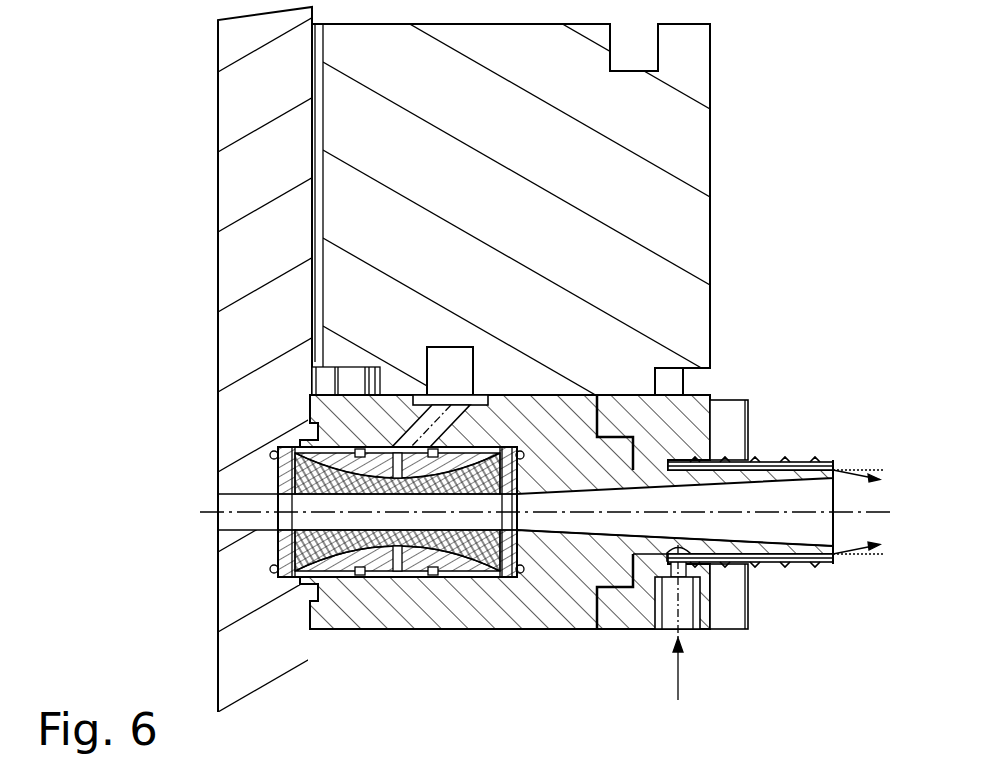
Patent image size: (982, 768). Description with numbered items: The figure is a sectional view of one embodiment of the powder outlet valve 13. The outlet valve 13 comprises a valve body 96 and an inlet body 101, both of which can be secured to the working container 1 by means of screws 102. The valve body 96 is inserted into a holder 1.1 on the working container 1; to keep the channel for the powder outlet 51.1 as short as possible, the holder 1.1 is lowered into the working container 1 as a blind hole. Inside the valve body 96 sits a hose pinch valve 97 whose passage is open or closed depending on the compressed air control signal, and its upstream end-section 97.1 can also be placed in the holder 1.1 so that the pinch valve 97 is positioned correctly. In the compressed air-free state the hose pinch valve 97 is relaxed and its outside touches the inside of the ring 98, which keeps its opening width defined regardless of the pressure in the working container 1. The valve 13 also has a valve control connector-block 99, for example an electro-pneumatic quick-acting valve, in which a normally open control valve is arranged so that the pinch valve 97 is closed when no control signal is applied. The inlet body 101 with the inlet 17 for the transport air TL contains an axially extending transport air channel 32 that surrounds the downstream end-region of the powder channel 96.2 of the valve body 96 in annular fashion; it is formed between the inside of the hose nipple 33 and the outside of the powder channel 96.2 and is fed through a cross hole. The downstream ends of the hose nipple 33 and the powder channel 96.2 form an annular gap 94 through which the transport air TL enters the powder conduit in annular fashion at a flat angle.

The working container 1 is at (218, 252).
The holder 1.1 is at (287, 440).
The powder outlet valve 13 is at (510, 672).
The inlet 17 is at (700, 631).
The transport air channel 32 is at (768, 461).
The hose nipple 33 is at (788, 461).
The powder outlet 51.1 is at (218, 500).
The annular gap 94 is at (831, 563).
The valve body 96 is at (380, 630).
The powder channel 96.2 is at (788, 548).
The hose pinch valve 97 is at (510, 580).
The upstream end-section 97.1 is at (283, 587).
The ring 98 is at (433, 580).
The valve control connector-block 99 is at (712, 247).
The inlet body 101 is at (645, 631).
The screws 102 is at (730, 400).
The transport air TL is at (694, 670).